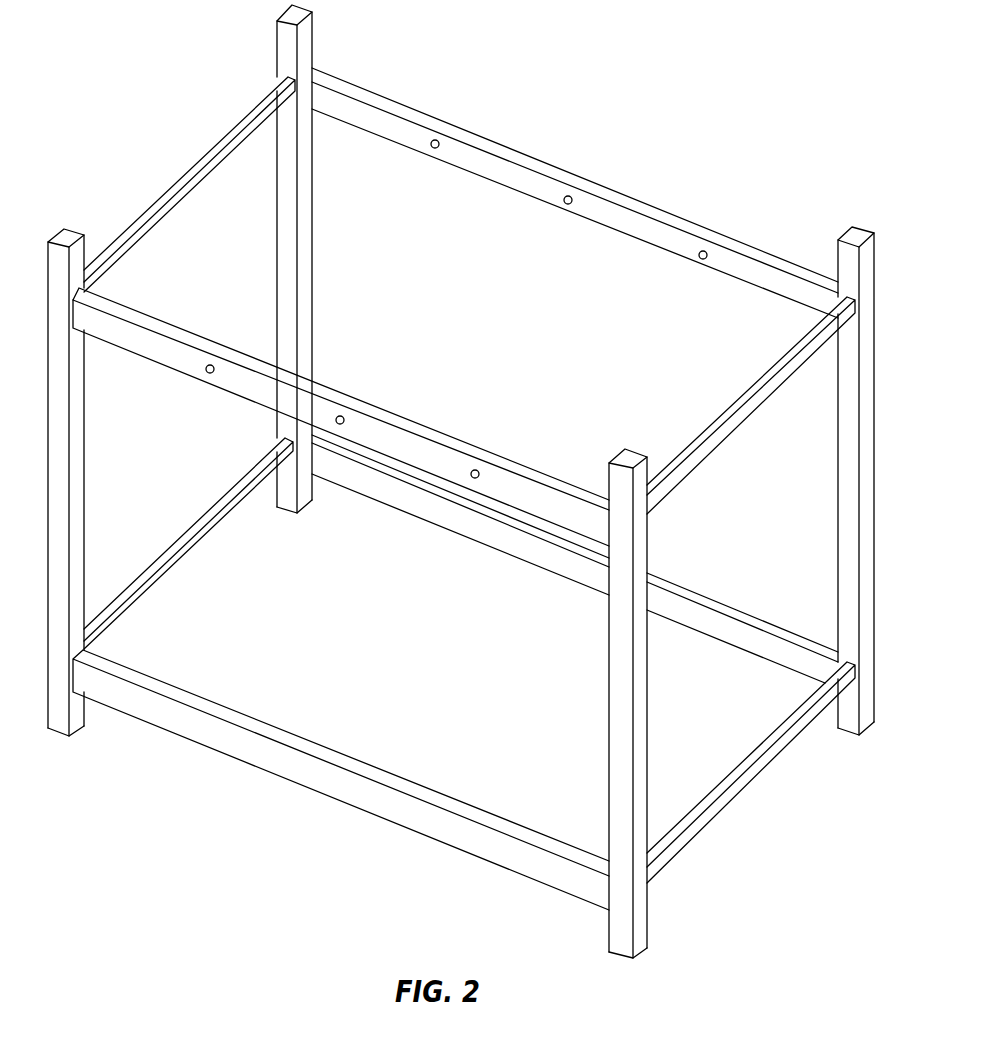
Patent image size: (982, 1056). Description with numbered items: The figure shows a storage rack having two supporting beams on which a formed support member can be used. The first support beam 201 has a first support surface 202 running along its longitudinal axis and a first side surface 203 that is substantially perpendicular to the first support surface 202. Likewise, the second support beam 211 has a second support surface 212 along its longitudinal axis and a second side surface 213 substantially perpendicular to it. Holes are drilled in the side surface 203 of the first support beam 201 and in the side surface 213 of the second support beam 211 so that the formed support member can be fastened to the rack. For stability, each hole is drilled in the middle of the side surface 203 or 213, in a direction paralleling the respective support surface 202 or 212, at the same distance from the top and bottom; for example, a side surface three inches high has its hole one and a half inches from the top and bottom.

The first support beam 201 is at (341, 413).
The first support surface 202 is at (375, 413).
The first side surface 203 is at (155, 342).
The second support beam 211 is at (575, 193).
The second support surface 212 is at (607, 193).
The second side surface 213 is at (405, 133).